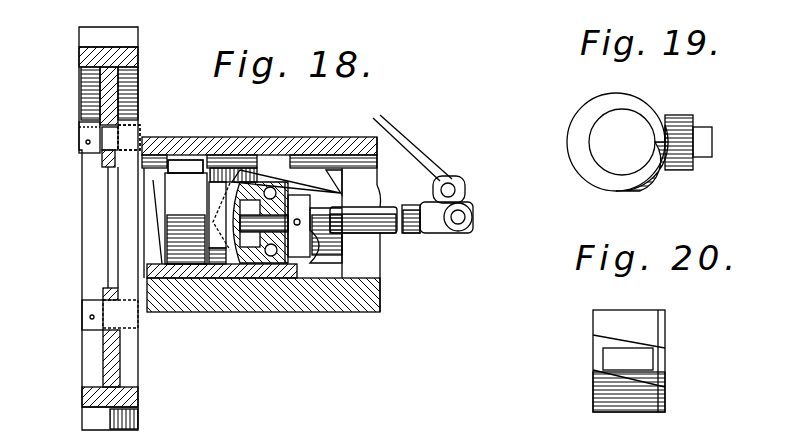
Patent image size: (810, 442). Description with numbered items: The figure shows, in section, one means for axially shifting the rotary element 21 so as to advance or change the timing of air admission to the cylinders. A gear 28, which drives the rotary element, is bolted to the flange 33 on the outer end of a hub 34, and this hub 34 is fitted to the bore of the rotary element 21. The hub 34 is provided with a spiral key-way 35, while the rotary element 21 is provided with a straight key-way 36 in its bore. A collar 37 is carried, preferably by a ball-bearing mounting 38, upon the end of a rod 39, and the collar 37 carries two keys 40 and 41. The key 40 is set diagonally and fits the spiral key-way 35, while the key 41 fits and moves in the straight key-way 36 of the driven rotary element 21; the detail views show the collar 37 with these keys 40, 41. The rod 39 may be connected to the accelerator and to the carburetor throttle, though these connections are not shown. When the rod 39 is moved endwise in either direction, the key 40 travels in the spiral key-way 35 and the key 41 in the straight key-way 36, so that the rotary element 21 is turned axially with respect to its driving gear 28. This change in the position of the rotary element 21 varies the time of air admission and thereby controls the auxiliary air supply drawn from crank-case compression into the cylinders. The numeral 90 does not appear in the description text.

In FIG. 18, the rotary element 21 is at (364, 293).
In FIG. 18, the gear 28 is at (79, 92).
In FIG. 18, the flange 33 is at (140, 125).
In FIG. 18, the hub 34 is at (327, 272).
In FIG. 18, the spiral key-way 35 is at (240, 168).
In FIG. 18, the straight key-way 36 is at (377, 158).
In FIG. 18, the collar 37 is at (220, 254).
In FIG. 18, the ball-bearing mounting 38 is at (289, 152).
In FIG. 18, the rod 39 is at (388, 234).
In FIG. 18, the key 40 is at (175, 177).
In FIG. 20, the key 40 is at (597, 347).
In FIG. 18, the key 41 is at (187, 160).
In FIG. 19, the key 41 is at (707, 147).
In FIG. 20, the key 41 is at (645, 360).
In FIG. 19, the ring 90 is at (688, 118).